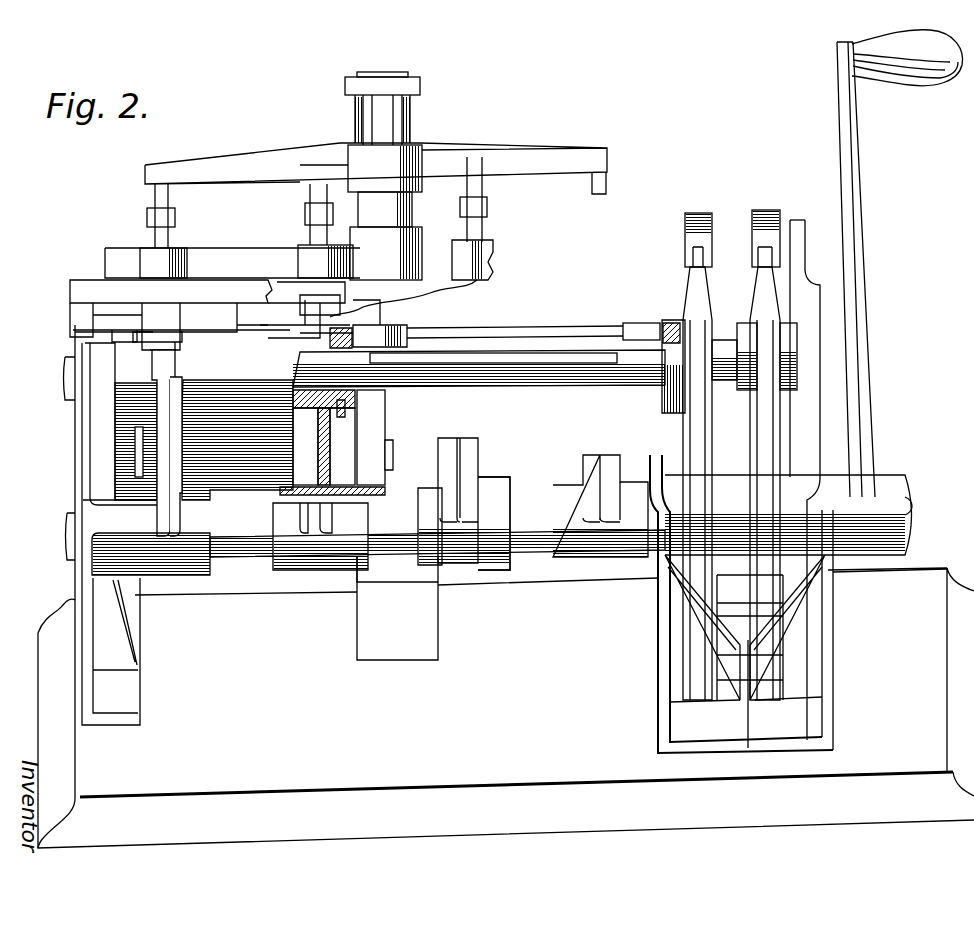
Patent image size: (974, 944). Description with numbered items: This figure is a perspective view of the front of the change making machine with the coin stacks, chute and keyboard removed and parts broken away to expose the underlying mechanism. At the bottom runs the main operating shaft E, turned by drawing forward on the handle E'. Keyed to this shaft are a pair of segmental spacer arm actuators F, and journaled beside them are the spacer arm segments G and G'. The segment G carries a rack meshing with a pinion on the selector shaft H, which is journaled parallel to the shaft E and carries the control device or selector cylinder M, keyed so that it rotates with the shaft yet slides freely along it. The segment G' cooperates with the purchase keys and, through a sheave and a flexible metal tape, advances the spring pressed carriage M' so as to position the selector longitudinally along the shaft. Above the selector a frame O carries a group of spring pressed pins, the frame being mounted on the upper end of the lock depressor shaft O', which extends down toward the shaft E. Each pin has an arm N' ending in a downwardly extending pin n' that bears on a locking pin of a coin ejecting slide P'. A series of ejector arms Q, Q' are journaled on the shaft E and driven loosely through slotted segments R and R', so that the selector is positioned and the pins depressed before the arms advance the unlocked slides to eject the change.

The selector cylinder M is at (232, 245).
The pin arm N' is at (376, 150).
The pin frame O is at (400, 108).
The lock depressor shaft O' is at (397, 212).
The downwardly extending pin n' is at (483, 218).
The spring pressed carriage M' is at (403, 314).
The selector shaft H is at (571, 380).
The coin ejecting slide P' is at (219, 339).
The ejector arm Q is at (372, 489).
The slotted segment R is at (378, 514).
The slotted segment R' is at (464, 485).
The ejector arm Q' is at (499, 503).
The main operating shaft E is at (719, 526).
The spacer arm segment G' is at (670, 456).
The segmental spacer arm actuator F is at (705, 438).
The spacer arm segment G is at (761, 371).
The handle E' is at (876, 390).